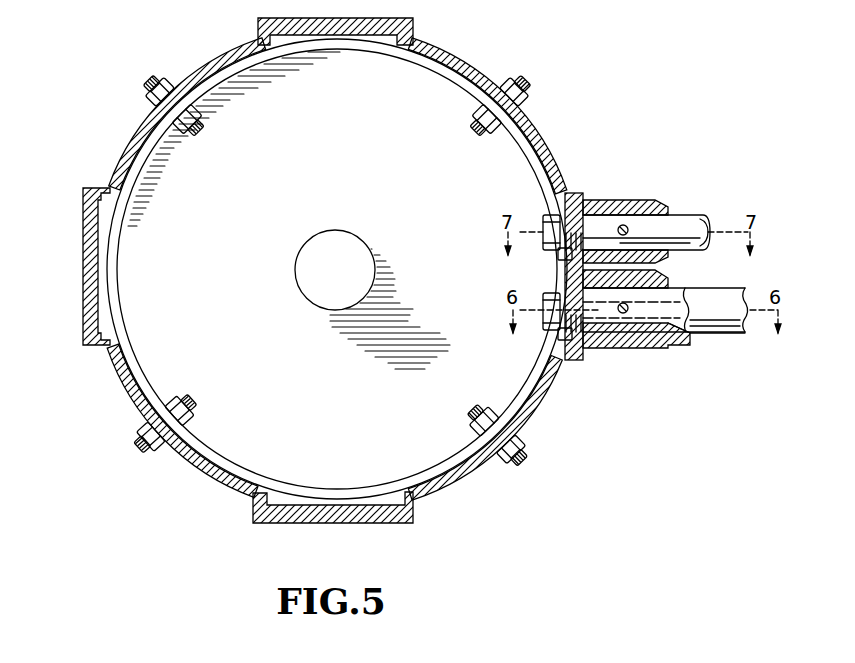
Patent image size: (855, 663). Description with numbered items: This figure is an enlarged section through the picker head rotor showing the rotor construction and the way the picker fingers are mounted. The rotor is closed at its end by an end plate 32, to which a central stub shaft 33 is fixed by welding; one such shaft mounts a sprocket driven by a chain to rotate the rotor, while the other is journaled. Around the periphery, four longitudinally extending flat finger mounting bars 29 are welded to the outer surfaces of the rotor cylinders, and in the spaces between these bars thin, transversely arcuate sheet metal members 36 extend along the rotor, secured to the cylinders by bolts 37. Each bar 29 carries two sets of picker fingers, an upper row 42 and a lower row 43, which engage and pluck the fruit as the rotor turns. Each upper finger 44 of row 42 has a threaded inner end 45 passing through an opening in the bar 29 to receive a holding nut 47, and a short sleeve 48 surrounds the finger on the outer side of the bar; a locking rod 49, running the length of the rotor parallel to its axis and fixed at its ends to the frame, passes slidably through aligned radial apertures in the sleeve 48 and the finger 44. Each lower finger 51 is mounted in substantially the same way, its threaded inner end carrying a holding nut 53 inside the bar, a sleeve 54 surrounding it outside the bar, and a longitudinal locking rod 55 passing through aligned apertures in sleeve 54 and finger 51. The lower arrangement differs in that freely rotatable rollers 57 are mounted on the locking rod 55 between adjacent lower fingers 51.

The finger mounting bar 29 is at (312, 20).
The end plate 32 is at (341, 170).
The stub shaft 33 is at (301, 258).
The arcuate sheet metal member 36 is at (186, 72).
The bolt 37 is at (141, 95).
The upper row of picker fingers 42 is at (673, 210).
The lower row of picker fingers 43 is at (680, 345).
The upper finger 44 is at (698, 214).
The threaded inner end 45 is at (545, 240).
The holding nut 47 is at (560, 256).
The sleeve 48 is at (608, 200).
The locking rod 49 is at (626, 226).
The lower finger 51 is at (684, 322).
The holding nut 53 is at (560, 332).
The sleeve 54 is at (640, 348).
The locking rod 55 is at (620, 315).
The roller 57 is at (734, 290).